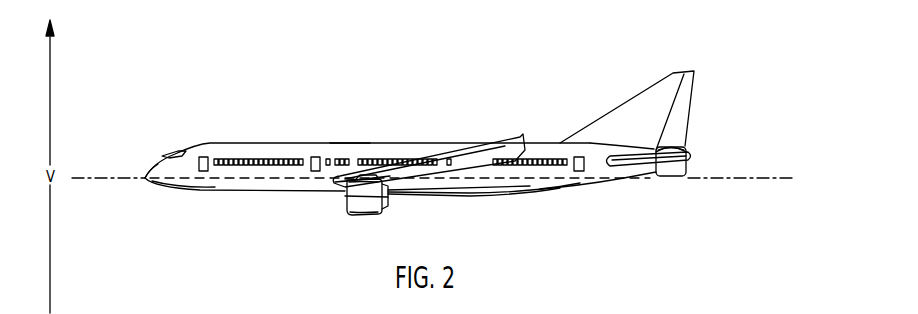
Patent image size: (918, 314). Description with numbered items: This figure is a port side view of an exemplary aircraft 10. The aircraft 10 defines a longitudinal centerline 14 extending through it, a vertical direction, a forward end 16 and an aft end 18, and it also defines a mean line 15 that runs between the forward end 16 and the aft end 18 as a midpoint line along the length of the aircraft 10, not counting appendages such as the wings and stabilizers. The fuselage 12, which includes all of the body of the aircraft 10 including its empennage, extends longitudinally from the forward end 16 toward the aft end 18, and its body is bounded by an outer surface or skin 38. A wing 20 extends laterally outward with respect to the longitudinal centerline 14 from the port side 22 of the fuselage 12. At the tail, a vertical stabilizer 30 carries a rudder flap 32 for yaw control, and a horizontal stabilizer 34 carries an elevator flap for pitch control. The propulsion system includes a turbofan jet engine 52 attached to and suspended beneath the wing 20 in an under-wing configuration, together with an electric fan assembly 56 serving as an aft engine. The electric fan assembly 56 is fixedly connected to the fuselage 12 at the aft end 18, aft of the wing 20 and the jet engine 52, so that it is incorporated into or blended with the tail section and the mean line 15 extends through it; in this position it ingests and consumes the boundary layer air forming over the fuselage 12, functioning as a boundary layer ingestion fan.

The aircraft 10 is at (187, 100).
The fuselage 12 is at (224, 186).
The longitudinal centerline 14 is at (80, 180).
The mean line 15 is at (552, 170).
The forward end 16 is at (148, 188).
The aft end 18 is at (625, 189).
The wings 20 is at (467, 168).
The port side 22 is at (517, 186).
The vertical stabilizer 30 is at (653, 100).
The rudder flap 32 is at (687, 95).
The horizontal stabilizers 34 is at (660, 180).
The outer surface or skin 38 is at (349, 142).
The turbofan jet engine 52 is at (350, 214).
The electric fan assembly 56 is at (679, 137).